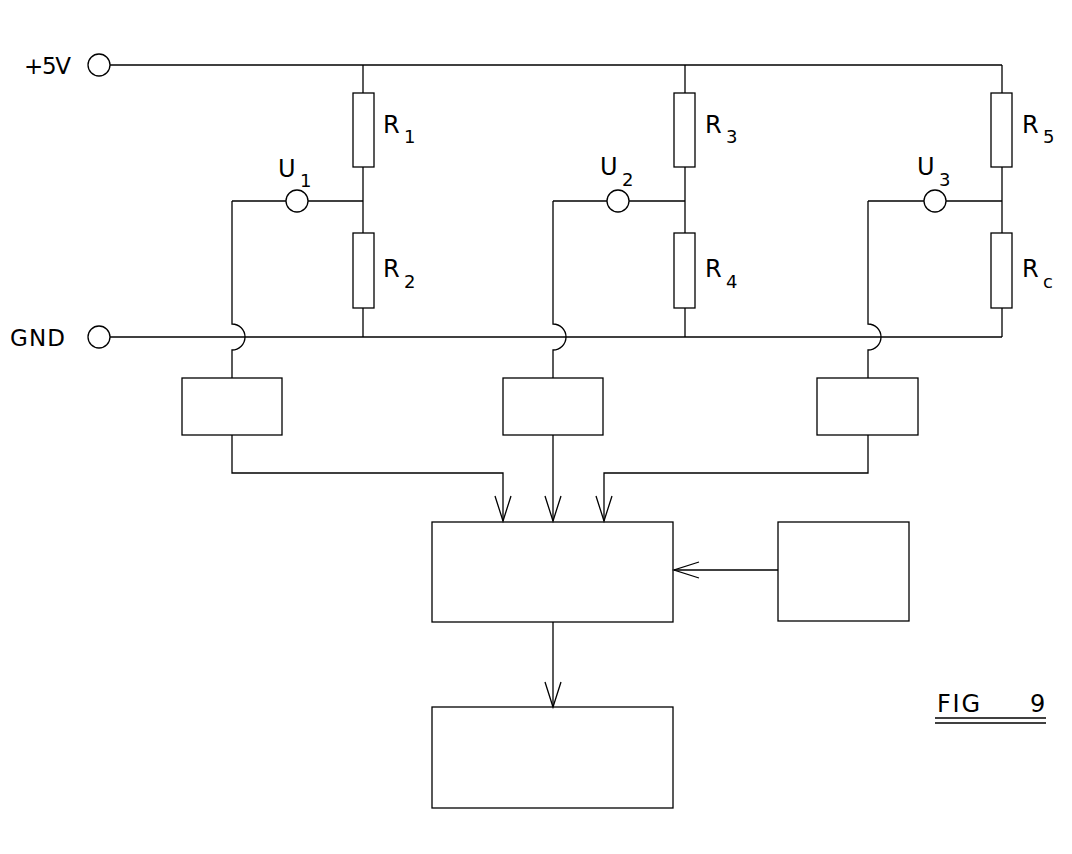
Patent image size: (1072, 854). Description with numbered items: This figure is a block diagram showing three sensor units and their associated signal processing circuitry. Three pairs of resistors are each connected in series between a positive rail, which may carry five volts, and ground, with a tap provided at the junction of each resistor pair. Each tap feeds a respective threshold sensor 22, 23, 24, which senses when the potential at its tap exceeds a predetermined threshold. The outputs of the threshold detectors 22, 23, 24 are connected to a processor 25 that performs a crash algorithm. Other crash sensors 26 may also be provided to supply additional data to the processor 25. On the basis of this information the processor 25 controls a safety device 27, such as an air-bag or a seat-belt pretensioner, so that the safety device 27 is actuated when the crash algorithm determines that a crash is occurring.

The threshold sensor 22 is at (282, 418).
The threshold sensor 23 is at (603, 418).
The threshold sensor 24 is at (918, 418).
The processor 25 is at (432, 570).
The other crash sensors 26 is at (909, 567).
The safety device 27 is at (432, 757).